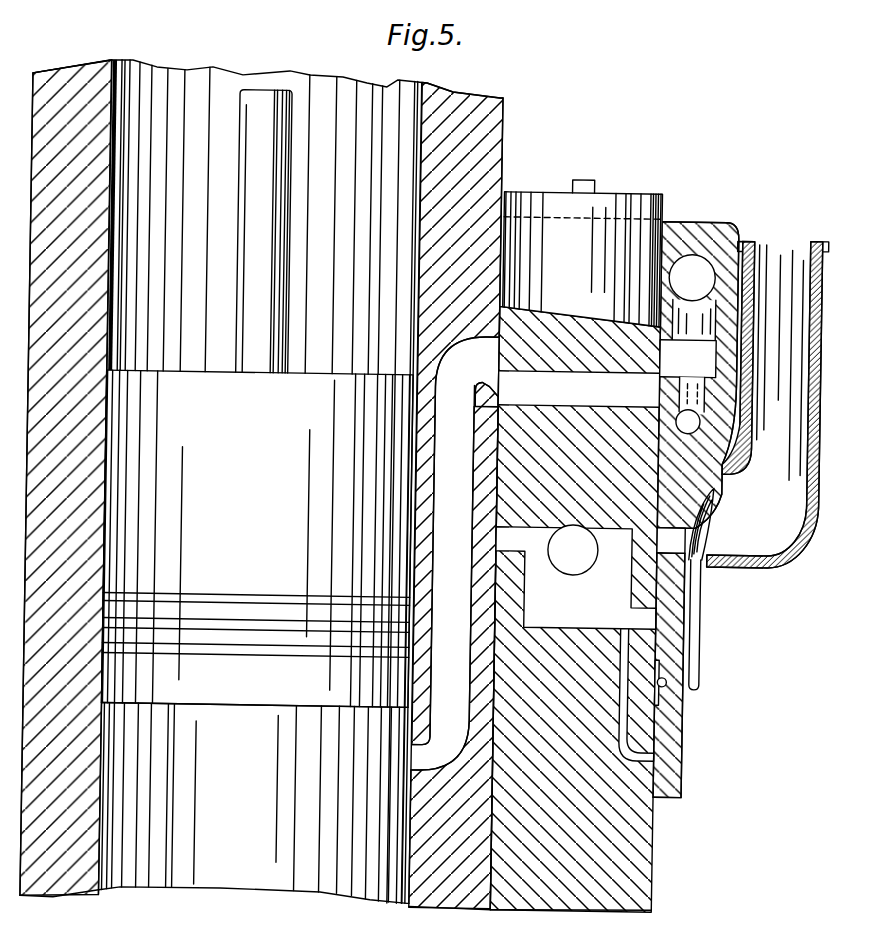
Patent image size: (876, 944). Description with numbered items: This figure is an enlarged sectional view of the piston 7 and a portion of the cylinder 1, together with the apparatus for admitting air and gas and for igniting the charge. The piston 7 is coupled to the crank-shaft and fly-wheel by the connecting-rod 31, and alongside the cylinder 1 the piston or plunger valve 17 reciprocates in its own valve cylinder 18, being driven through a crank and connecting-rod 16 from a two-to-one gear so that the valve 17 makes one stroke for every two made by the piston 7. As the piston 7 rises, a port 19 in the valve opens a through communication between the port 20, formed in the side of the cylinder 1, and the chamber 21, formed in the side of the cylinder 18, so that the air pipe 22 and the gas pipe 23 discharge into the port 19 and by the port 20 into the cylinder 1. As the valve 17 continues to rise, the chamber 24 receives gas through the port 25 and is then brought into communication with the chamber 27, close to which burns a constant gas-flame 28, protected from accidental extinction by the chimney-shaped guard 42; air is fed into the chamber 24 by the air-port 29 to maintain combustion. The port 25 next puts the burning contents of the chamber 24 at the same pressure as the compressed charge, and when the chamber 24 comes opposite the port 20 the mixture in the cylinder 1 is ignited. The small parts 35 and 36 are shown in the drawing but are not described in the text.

The cylinder 1 is at (253, 803).
The piston 7 is at (257, 538).
The connecting-rod 31 is at (264, 231).
The crank and connecting-rod 16 is at (584, 179).
The piston or plunger valve 17 is at (582, 259).
The valve cylinder 18 is at (680, 675).
The port 19 is at (579, 389).
The port 20 is at (455, 553).
The chamber 21 is at (688, 359).
The air pipe 22 is at (692, 297).
The gas pipe 23 is at (690, 405).
The chamber 24 is at (576, 578).
The port 25 is at (630, 682).
The chamber 27 is at (671, 540).
The constant gas-flame 28 is at (713, 589).
The air-port 29 is at (573, 550).
The indicator 35 is at (667, 682).
The port 36 is at (487, 398).
The chimney-shaped guard 42 is at (768, 404).